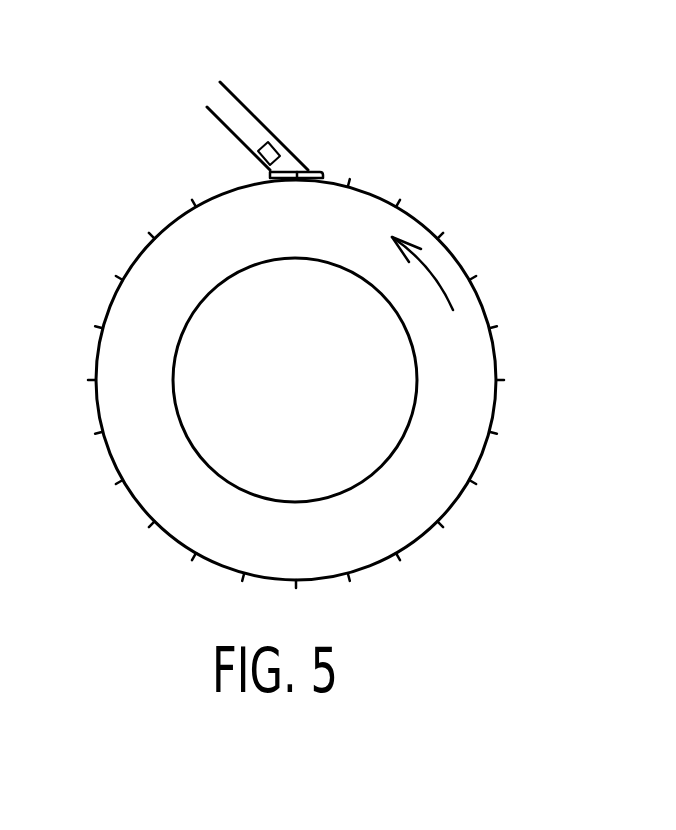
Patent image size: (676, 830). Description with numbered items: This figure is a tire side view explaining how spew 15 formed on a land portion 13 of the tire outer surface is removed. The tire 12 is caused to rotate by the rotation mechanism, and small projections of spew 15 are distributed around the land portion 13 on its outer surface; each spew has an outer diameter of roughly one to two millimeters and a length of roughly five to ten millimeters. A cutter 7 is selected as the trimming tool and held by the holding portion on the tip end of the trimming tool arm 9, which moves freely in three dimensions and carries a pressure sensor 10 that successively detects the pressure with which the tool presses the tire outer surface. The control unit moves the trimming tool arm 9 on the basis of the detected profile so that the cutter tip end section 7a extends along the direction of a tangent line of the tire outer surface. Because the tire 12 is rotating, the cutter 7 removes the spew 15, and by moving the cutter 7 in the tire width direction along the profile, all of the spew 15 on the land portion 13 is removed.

The cutter 7 is at (318, 170).
The cutter tip end section 7a is at (297, 173).
The trimming tool arm 9 is at (238, 130).
The pressure sensor 10 is at (280, 148).
The tire 12 is at (142, 253).
The land portion 13 is at (483, 303).
The spew 15 is at (90, 378).